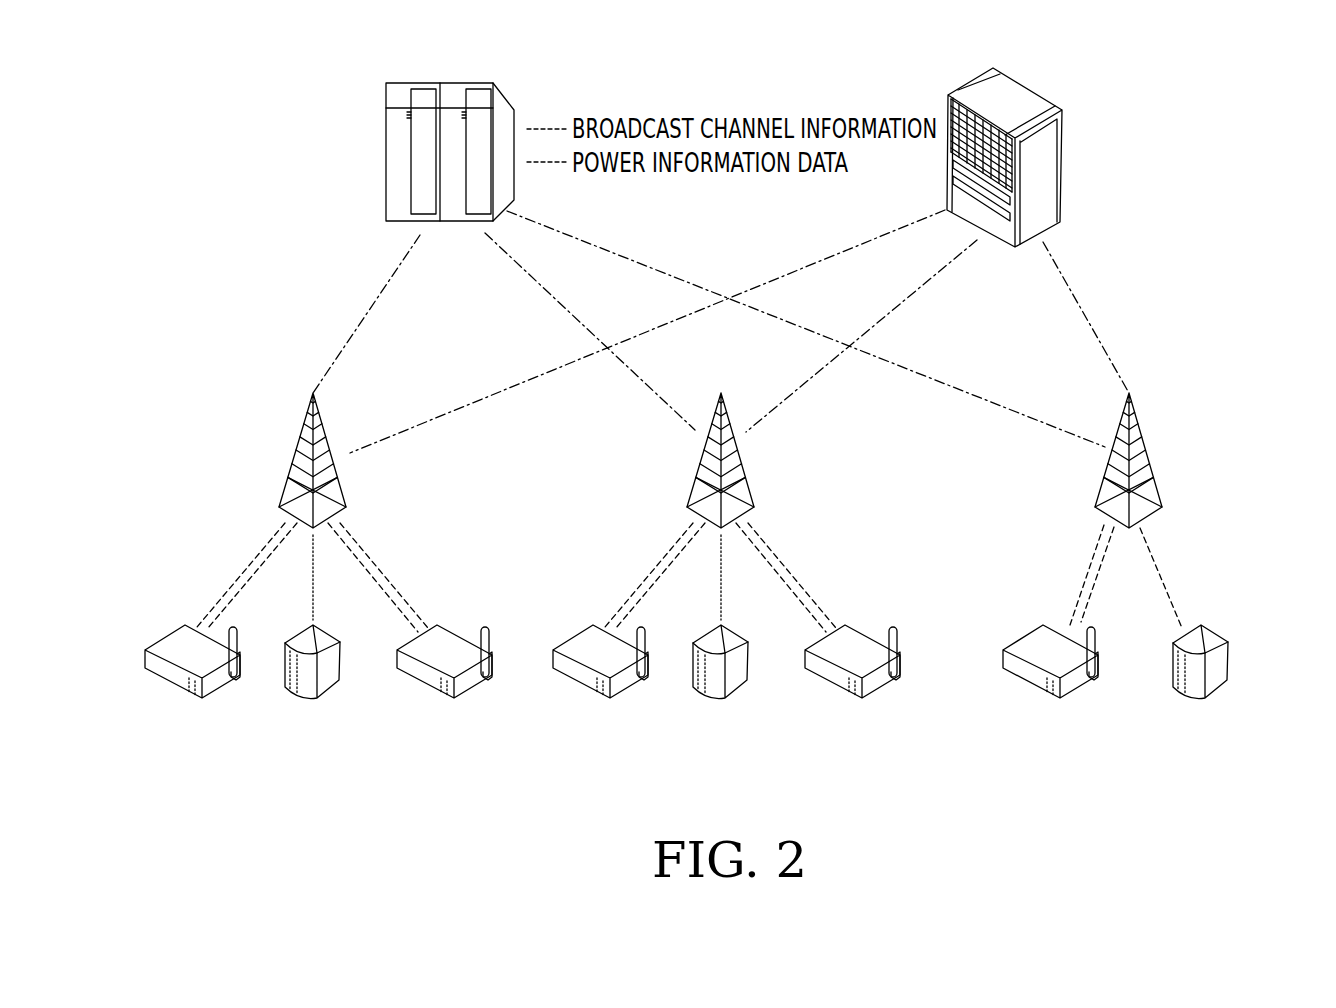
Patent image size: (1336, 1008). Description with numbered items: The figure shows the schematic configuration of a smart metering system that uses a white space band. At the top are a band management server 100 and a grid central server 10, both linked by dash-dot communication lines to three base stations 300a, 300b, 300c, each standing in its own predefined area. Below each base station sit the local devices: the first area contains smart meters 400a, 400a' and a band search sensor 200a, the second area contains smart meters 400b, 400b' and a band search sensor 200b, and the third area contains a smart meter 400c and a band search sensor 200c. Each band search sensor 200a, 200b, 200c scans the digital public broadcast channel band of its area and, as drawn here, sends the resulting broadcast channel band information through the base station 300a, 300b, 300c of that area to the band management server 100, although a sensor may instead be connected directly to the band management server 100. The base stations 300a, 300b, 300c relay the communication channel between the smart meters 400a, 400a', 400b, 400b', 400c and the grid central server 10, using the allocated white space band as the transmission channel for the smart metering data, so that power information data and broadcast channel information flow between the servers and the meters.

The band management server 100 is at (453, 87).
The grid central server 10 is at (1016, 83).
The base station 300a is at (347, 493).
The base station 300b is at (755, 493).
The base station 300c is at (1163, 493).
The smart meter 400a is at (192, 720).
The smart meter 400a' is at (444, 720).
The smart meter 400b is at (600, 720).
The smart meter 400b' is at (852, 720).
The smart meter 400c is at (1040, 700).
The band search sensor 200a is at (308, 692).
The band search sensor 200b is at (716, 692).
The band search sensor 200c is at (1196, 692).